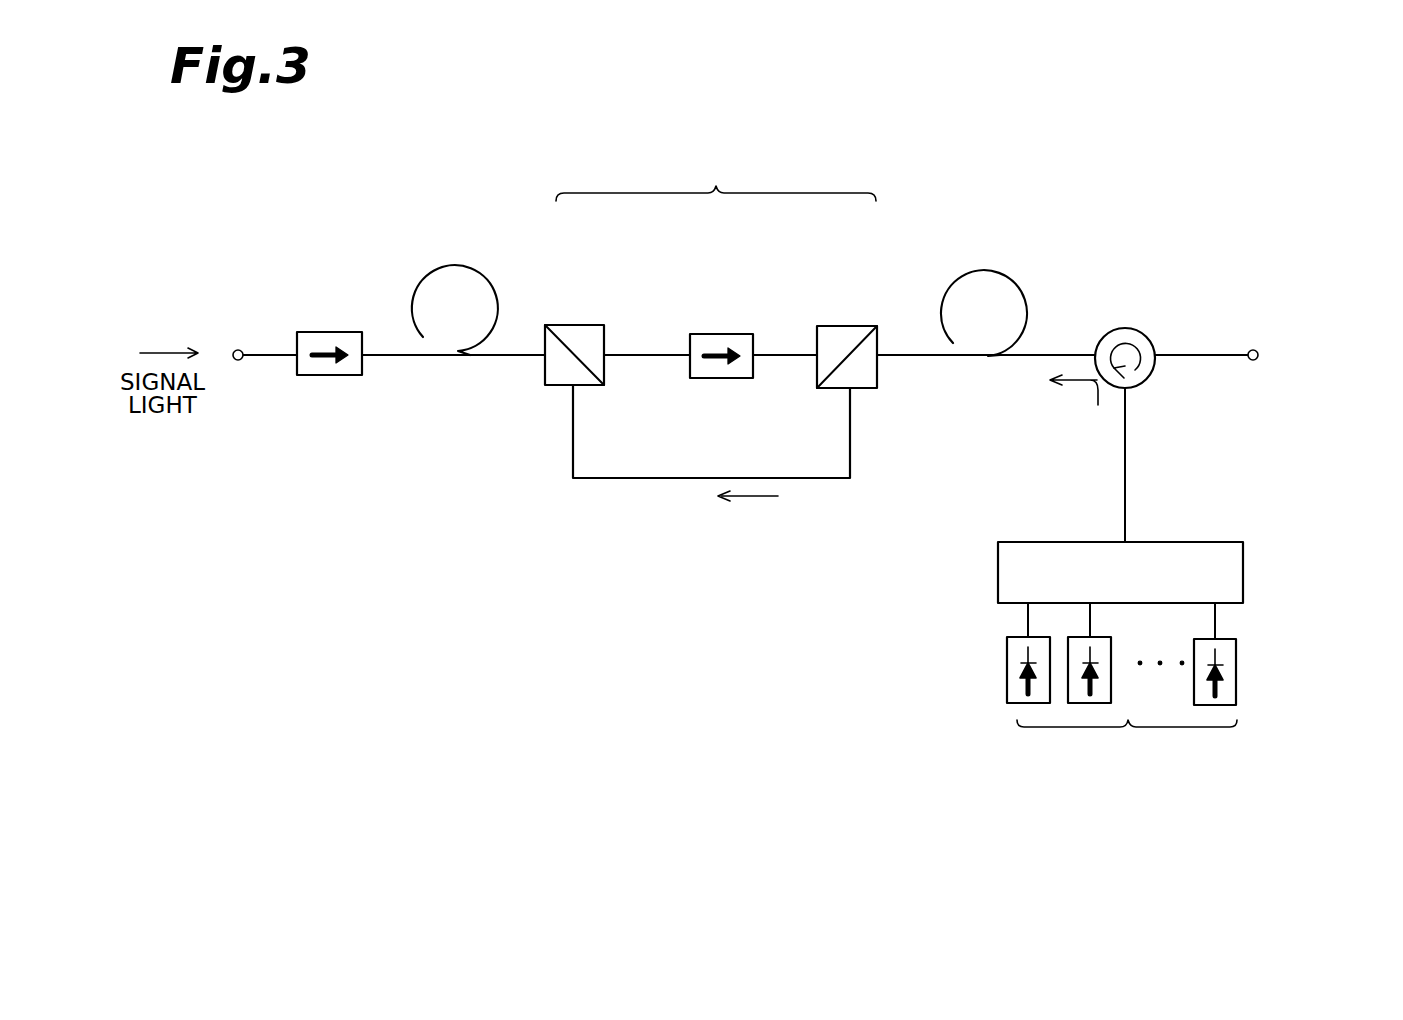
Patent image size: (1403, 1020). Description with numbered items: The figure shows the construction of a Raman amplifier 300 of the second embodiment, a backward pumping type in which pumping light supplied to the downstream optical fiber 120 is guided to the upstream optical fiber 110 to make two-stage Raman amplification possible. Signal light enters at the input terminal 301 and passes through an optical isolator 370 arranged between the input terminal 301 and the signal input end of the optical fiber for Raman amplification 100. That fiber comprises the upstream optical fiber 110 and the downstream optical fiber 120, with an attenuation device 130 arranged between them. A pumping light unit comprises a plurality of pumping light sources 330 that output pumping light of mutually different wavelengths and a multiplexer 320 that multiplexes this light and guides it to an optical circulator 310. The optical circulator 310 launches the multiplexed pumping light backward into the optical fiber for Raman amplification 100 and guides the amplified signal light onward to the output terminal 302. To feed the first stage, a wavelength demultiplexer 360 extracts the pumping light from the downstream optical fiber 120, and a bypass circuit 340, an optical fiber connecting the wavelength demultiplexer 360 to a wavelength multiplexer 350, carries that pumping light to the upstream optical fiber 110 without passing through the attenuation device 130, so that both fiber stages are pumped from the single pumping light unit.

The Raman amplifier 300 is at (945, 188).
The optical fiber for Raman amplification 100 is at (716, 178).
The upstream optical fiber 110 is at (470, 268).
The downstream optical fiber 120 is at (968, 268).
The attenuation device 130 is at (725, 333).
The input terminal 301 is at (238, 349).
The output terminal 302 is at (1253, 350).
The optical circulator 310 is at (1125, 327).
The multiplexer 320 is at (1244, 571).
The pumping light sources 330 is at (1127, 730).
The bypass circuit 340 is at (667, 479).
The wavelength multiplexer 350 is at (573, 324).
The wavelength demultiplexer 360 is at (844, 325).
The optical isolator 370 is at (325, 331).